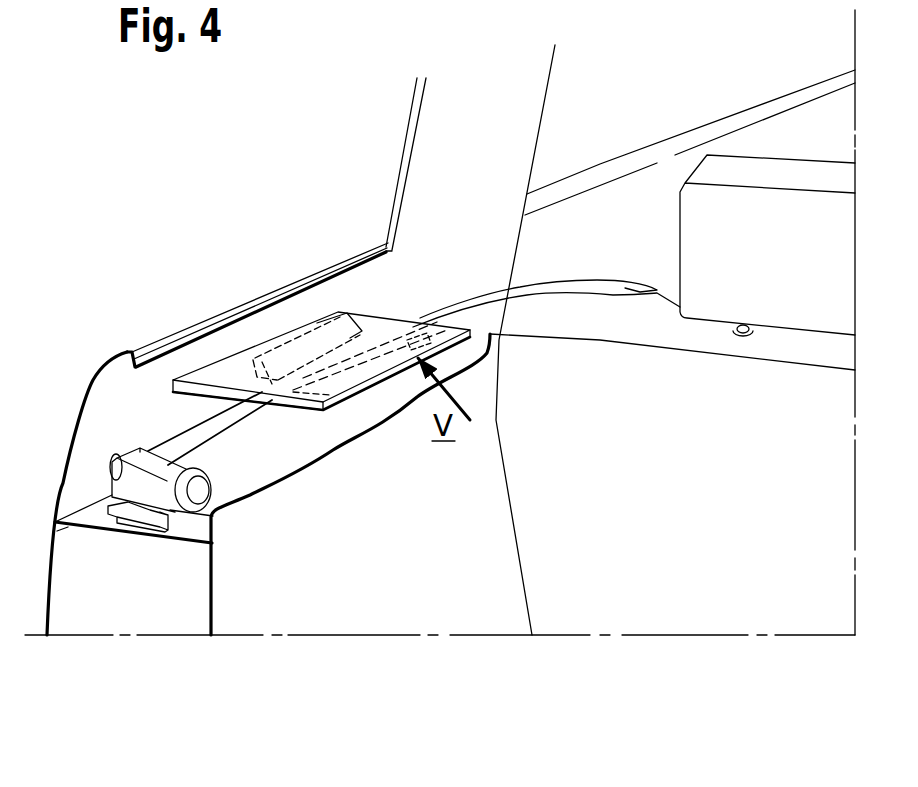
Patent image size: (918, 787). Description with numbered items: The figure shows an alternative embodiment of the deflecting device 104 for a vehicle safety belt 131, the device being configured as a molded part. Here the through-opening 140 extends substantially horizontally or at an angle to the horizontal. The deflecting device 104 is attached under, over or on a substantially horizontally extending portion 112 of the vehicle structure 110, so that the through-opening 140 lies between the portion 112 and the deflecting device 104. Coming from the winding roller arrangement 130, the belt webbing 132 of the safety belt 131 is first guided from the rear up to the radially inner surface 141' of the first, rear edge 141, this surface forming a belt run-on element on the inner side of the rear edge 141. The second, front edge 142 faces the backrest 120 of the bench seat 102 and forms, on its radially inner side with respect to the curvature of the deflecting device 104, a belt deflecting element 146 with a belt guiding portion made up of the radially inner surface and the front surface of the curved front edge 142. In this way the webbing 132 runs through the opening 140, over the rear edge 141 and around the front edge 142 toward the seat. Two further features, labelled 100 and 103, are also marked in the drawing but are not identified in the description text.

The vehicle door 100 is at (298, 648).
The bench seat 102 is at (760, 463).
The upper edge of door inner panel 103 is at (236, 482).
The deflecting device 104 is at (375, 370).
The vehicle structure 110 is at (78, 410).
The substantially horizontally extending portion 112 is at (318, 320).
The backrest 120 is at (788, 562).
The winding roller arrangement 130 is at (134, 508).
The safety belt 131 is at (557, 280).
The belt webbing 132 is at (240, 410).
The through-opening 140 is at (378, 322).
The first, rear edge 141 is at (253, 316).
The radially inner surface 141' is at (254, 298).
The second, front edge 142 is at (430, 337).
The belt deflecting element 146 is at (360, 311).